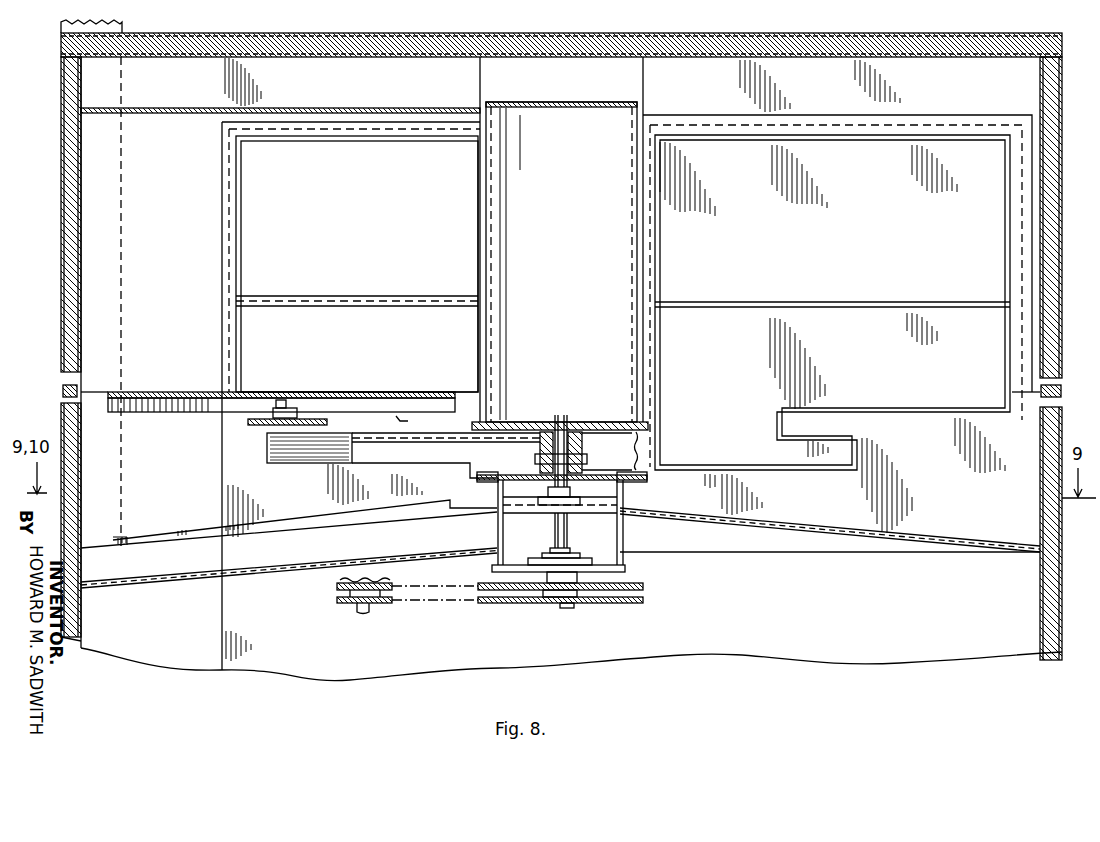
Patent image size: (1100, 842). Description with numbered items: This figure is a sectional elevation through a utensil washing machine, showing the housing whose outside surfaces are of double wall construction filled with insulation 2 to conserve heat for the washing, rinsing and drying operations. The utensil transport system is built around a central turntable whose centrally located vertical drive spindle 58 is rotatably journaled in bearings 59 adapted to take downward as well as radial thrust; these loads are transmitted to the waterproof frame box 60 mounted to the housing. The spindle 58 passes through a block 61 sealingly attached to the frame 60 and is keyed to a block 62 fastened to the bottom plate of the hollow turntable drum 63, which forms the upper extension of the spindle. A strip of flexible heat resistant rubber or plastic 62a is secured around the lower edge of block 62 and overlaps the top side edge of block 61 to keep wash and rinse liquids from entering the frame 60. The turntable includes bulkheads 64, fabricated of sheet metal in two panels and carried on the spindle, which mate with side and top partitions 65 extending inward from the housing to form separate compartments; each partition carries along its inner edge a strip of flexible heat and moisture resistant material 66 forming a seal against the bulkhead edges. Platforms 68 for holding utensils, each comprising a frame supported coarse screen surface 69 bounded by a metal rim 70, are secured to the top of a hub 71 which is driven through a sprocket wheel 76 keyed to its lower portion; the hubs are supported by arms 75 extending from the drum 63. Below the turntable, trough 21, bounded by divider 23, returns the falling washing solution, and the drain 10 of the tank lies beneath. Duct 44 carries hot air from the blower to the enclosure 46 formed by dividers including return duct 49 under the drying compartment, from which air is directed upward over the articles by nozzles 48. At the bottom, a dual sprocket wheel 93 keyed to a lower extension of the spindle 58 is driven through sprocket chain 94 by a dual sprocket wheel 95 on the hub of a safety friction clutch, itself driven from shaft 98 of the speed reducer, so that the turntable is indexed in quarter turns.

The strip of flexible heat and moisture resistant material 66 is at (298, 70).
The duct 44 is at (81, 249).
The insulation 2 is at (1056, 352).
The return duct 49 is at (374, 93).
The side and top partitions 65 is at (222, 245).
The bulkheads 64 is at (377, 310).
The hollow turntable drum 63 is at (632, 294).
The coarse screen surface 69 is at (176, 392).
The platforms 68 is at (430, 384).
The metal rim 70 is at (411, 421).
The hub 71 is at (290, 406).
The sprocket wheel 76 is at (256, 426).
The arms 75 is at (298, 446).
The drain 10 is at (525, 495).
The block 62 is at (542, 430).
The vertical drive spindle 58 is at (562, 424).
The strip of flexible heat resistant rubber or plastic 62a is at (588, 458).
The block 61 is at (582, 481).
The waterproof frame box 60 is at (624, 538).
The bearings 59 is at (568, 500).
The nozzles 48 is at (185, 533).
The enclosure 46 is at (142, 576).
The trough 21 is at (840, 532).
The divider 23 is at (938, 491).
The dual sprocket wheel 95 is at (337, 588).
The shaft 98 is at (368, 606).
The sprocket chain 94 is at (428, 600).
The dual sprocket wheel 93 is at (643, 600).